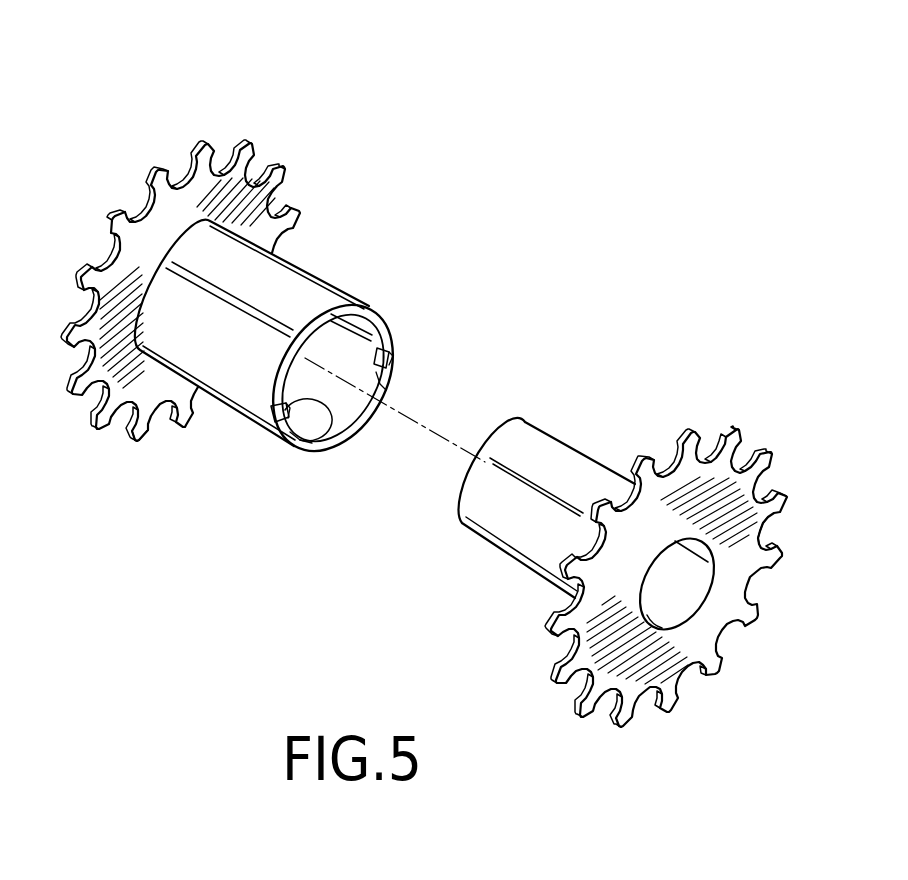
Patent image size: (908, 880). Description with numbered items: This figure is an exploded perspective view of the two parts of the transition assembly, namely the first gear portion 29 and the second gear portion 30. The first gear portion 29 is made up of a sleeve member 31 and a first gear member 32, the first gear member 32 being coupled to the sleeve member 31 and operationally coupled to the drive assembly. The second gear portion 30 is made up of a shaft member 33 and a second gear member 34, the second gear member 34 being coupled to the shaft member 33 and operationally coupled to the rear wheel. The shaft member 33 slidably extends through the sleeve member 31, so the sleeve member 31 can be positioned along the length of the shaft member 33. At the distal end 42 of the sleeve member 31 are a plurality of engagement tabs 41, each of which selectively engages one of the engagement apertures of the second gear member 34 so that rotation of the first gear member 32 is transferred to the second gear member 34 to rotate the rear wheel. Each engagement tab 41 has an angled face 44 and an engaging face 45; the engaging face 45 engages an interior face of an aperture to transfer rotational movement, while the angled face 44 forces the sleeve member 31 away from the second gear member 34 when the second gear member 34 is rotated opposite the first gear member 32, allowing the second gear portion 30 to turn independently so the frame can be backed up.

The first gear portion 29 is at (303, 263).
The second gear portion 30 is at (602, 455).
The sleeve member 31 is at (137, 439).
The first gear member 32 is at (247, 167).
The shaft member 33 is at (550, 443).
The second gear member 34 is at (758, 523).
The engagement tabs 41 is at (385, 348).
The distal end 42 is at (343, 292).
The angled face 44 is at (387, 360).
The engaging face 45 is at (384, 370).